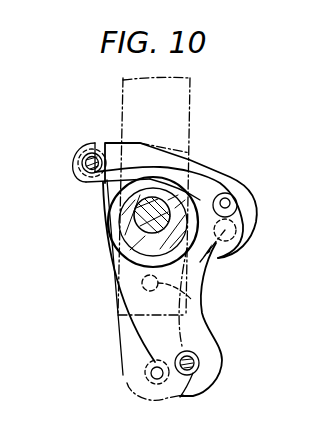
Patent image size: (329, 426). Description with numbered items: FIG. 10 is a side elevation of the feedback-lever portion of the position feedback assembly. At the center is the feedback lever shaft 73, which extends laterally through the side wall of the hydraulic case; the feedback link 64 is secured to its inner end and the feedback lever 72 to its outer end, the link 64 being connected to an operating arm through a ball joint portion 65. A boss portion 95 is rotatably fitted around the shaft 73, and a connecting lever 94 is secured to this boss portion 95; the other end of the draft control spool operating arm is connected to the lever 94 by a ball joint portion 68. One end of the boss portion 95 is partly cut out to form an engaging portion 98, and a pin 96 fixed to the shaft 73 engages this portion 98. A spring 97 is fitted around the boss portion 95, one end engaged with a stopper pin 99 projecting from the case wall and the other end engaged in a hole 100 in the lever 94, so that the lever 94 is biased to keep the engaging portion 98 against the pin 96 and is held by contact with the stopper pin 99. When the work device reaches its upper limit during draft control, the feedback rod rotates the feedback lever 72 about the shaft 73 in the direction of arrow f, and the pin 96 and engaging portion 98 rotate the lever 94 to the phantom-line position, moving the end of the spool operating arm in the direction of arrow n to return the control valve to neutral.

The feedback lever 72 is at (190, 98).
The spring 97 is at (170, 173).
The feedback lever shaft 73 is at (190, 187).
The hole 100 is at (233, 201).
The stopper pin 99 is at (85, 170).
The boss portion 95 is at (133, 200).
The engaging portion 98 is at (133, 247).
The feedback link 64 is at (117, 285).
The connecting lever 94 is at (152, 330).
The pin 96 is at (213, 280).
The ball joint portion 65 is at (204, 317).
The ball joint portion 68 is at (199, 362).
The arrow n is at (142, 373).
The arrow f is at (218, 262).